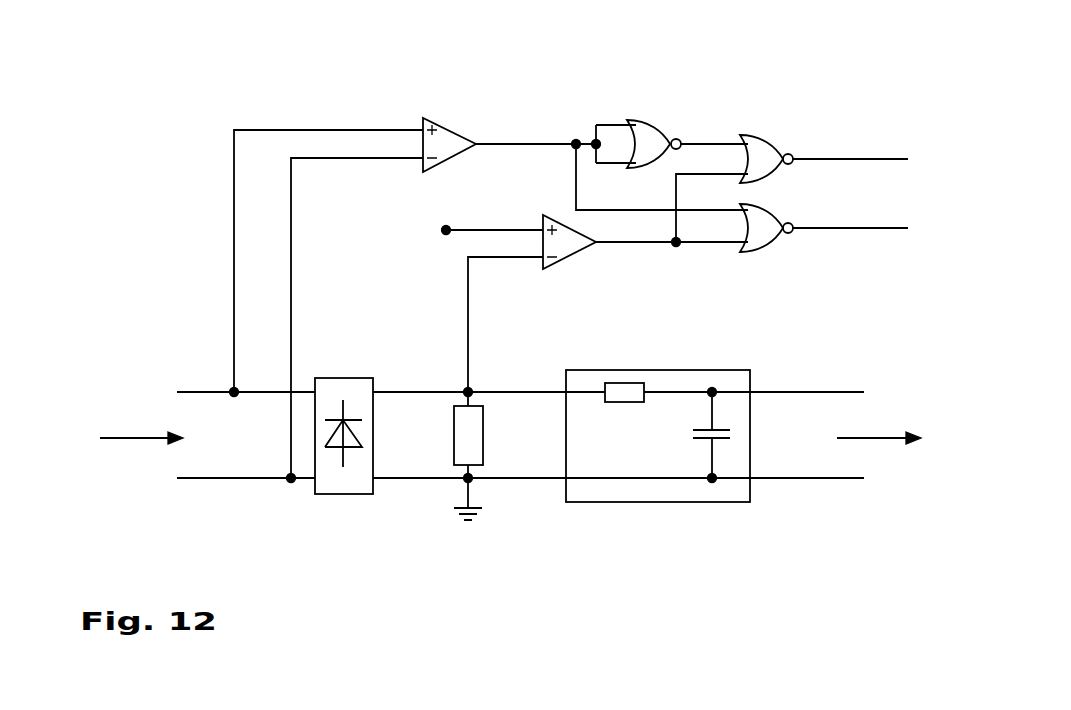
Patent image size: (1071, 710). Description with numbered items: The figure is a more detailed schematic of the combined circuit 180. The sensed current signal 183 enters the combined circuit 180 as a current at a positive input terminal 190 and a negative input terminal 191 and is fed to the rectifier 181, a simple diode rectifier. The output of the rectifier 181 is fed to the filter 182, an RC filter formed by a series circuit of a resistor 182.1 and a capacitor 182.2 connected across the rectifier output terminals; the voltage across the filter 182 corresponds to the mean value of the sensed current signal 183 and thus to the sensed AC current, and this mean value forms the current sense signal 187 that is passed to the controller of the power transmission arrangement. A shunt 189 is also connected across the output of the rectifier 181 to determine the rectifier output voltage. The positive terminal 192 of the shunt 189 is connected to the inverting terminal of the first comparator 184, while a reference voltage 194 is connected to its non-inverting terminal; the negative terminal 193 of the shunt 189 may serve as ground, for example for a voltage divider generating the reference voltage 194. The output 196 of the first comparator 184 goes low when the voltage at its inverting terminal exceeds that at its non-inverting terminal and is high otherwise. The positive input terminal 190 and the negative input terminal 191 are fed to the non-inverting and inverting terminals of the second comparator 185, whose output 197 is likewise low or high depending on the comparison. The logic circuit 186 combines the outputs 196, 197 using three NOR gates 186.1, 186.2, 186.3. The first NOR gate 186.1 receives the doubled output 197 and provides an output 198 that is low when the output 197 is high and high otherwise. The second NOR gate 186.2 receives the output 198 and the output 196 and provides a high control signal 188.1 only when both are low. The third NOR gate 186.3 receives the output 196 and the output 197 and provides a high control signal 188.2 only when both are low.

The combined circuit 180 is at (147, 106).
The rectifier 181 is at (338, 377).
The filter 182 is at (690, 417).
The resistor 182.1 is at (632, 358).
The capacitor 182.2 is at (693, 438).
The sensed current signal 183 is at (141, 437).
The first comparator 184 is at (570, 255).
The second comparator 185 is at (449, 127).
The logic circuit 186 is at (786, 63).
The first NOR gate 186.1 is at (663, 110).
The second NOR gate 186.2 is at (778, 137).
The third NOR gate 186.3 is at (767, 248).
The current sense signal 187 is at (877, 437).
The control signal 188.1 is at (908, 160).
The control signal 188.2 is at (908, 228).
The shunt 189 is at (453, 433).
The positive input terminal 190 is at (232, 388).
The negative input terminal 191 is at (287, 475).
The positive terminal 192 is at (465, 388).
The negative terminal 193 is at (463, 485).
The reference voltage 194 is at (442, 230).
The output 196 is at (678, 247).
The output 197 is at (573, 142).
The output 198 is at (712, 142).